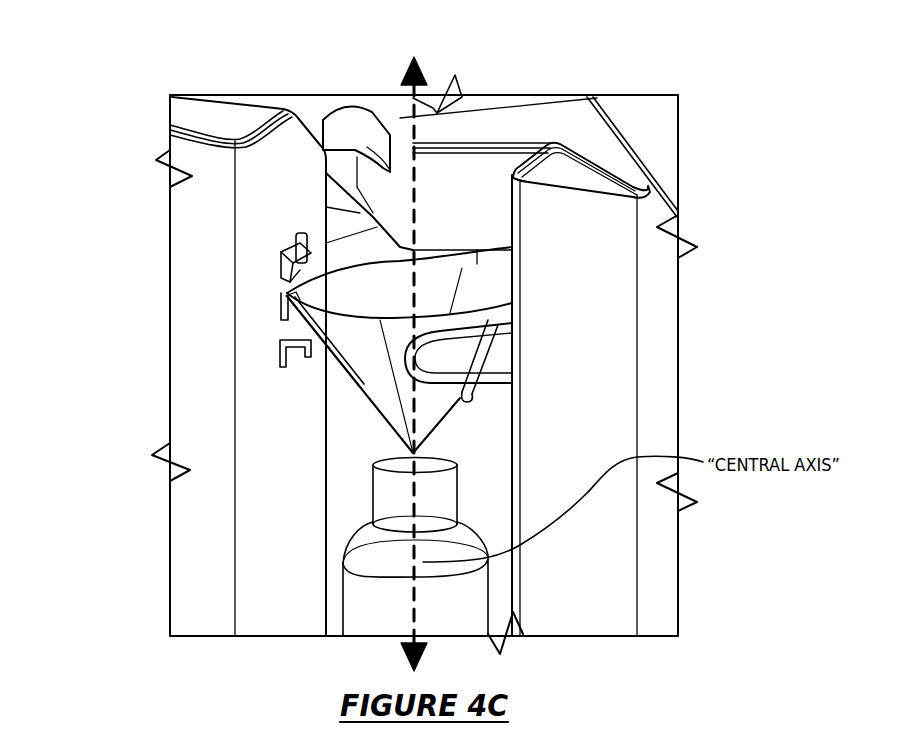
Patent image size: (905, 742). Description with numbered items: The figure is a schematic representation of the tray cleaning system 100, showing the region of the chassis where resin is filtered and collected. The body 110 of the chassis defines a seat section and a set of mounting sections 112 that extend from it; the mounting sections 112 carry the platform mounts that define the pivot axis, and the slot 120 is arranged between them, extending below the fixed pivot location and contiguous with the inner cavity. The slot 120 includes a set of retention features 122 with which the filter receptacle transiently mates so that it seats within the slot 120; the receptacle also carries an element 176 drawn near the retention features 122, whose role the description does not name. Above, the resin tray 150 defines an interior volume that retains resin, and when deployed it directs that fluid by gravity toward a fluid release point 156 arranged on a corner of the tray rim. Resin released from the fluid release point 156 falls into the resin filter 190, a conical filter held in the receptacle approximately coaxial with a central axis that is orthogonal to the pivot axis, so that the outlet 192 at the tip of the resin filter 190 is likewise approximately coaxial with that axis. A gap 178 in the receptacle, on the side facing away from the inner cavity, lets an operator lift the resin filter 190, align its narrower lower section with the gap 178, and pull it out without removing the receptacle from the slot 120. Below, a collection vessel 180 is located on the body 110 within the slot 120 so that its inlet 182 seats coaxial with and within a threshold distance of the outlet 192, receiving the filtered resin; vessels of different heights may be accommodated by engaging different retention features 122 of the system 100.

The tray cleaning system 100 is at (700, 165).
The body 110 is at (583, 222).
The mounting sections 112 is at (223, 210).
The slot 120 is at (353, 420).
The retention features 122 is at (290, 316).
The resin tray 150 is at (480, 175).
The fluid release point 156 is at (414, 147).
The clip 176 is at (281, 263).
The gap 178 is at (352, 336).
The collection vessel 180 is at (393, 610).
The inlet 182 is at (400, 471).
The resin filter 190 is at (432, 298).
The outlet 192 is at (395, 450).